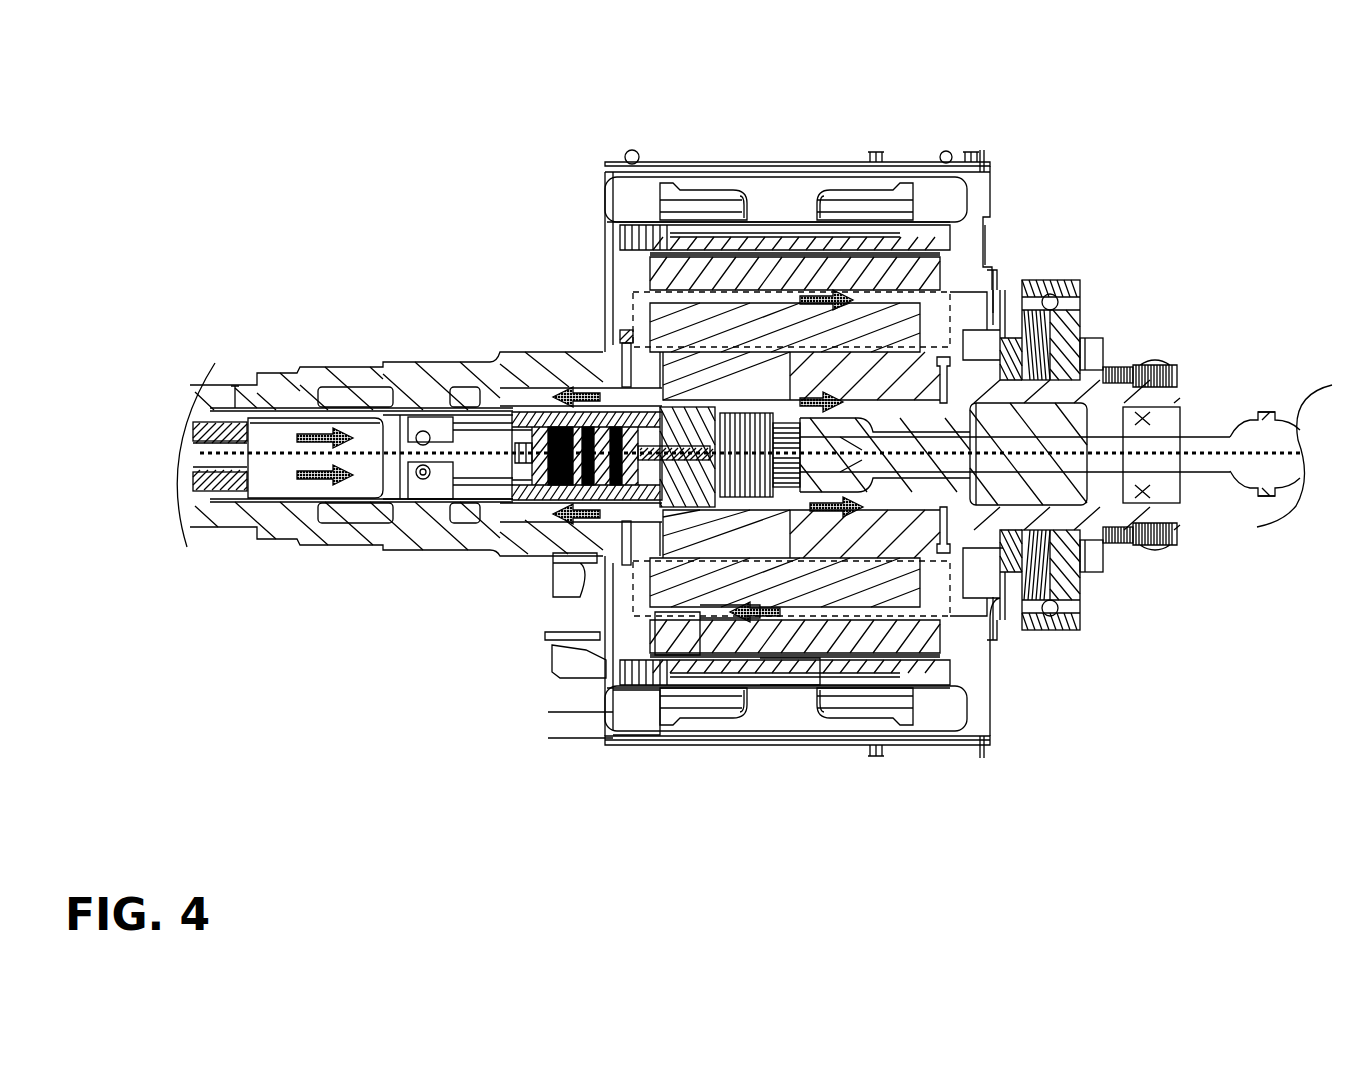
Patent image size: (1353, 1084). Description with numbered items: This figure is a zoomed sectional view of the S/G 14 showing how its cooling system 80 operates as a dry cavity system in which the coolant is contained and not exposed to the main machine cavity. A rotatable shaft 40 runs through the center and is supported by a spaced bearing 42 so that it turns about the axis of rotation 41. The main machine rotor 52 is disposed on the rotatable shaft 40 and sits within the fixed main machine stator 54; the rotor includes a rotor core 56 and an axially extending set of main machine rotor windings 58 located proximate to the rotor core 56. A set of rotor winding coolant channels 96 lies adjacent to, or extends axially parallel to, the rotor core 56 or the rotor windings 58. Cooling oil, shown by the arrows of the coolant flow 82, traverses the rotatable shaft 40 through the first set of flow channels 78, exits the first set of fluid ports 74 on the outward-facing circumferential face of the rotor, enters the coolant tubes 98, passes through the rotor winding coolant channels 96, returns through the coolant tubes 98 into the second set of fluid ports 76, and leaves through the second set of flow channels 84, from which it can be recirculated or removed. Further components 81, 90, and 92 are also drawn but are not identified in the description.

The S/G 14 is at (363, 252).
The rotatable shaft 40 is at (1255, 452).
The axis of rotation 41 is at (1214, 446).
The spaced bearing 42 is at (1087, 615).
The main machine rotor 52 is at (672, 625).
The main machine stator 54 is at (790, 660).
The rotor core 56 is at (625, 730).
The main machine rotor windings 58 is at (727, 612).
The first set of fluid ports 74 is at (955, 350).
The second set of fluid ports 76 is at (622, 333).
The first set of flow channels 78 is at (870, 395).
The cooling system 80 is at (965, 250).
The housing wall 81 is at (978, 278).
The coolant flow 82 is at (310, 480).
The second set of flow channels 84 is at (504, 395).
The stator winding 90 is at (700, 216).
The fastener 92 is at (630, 152).
The rotor winding coolant channels 96 is at (724, 298).
The coolant tubes 98 is at (617, 292).